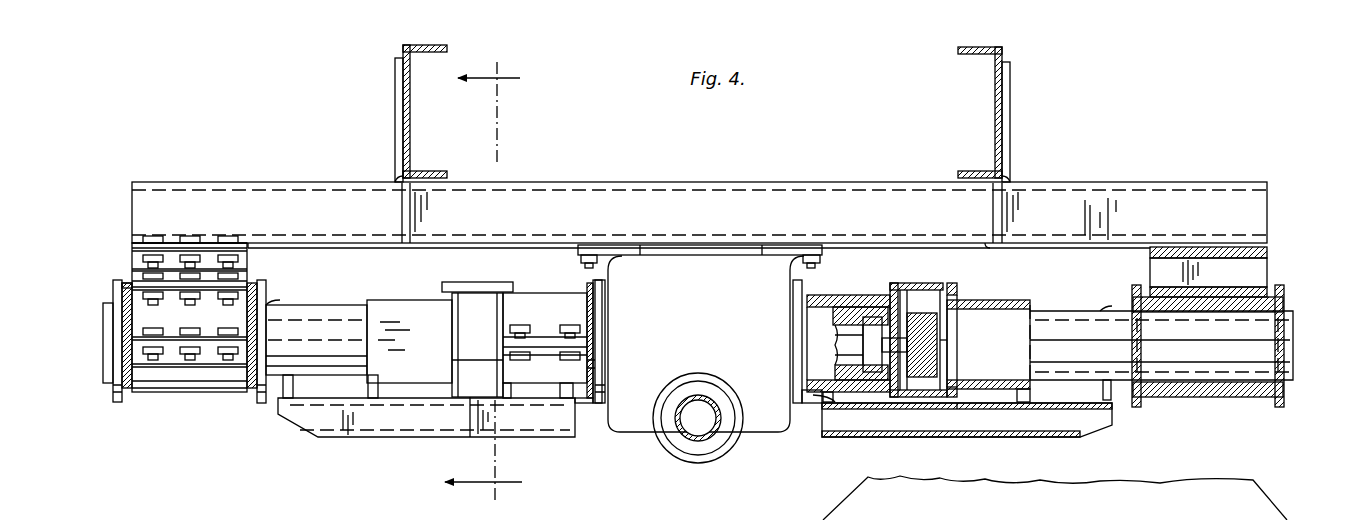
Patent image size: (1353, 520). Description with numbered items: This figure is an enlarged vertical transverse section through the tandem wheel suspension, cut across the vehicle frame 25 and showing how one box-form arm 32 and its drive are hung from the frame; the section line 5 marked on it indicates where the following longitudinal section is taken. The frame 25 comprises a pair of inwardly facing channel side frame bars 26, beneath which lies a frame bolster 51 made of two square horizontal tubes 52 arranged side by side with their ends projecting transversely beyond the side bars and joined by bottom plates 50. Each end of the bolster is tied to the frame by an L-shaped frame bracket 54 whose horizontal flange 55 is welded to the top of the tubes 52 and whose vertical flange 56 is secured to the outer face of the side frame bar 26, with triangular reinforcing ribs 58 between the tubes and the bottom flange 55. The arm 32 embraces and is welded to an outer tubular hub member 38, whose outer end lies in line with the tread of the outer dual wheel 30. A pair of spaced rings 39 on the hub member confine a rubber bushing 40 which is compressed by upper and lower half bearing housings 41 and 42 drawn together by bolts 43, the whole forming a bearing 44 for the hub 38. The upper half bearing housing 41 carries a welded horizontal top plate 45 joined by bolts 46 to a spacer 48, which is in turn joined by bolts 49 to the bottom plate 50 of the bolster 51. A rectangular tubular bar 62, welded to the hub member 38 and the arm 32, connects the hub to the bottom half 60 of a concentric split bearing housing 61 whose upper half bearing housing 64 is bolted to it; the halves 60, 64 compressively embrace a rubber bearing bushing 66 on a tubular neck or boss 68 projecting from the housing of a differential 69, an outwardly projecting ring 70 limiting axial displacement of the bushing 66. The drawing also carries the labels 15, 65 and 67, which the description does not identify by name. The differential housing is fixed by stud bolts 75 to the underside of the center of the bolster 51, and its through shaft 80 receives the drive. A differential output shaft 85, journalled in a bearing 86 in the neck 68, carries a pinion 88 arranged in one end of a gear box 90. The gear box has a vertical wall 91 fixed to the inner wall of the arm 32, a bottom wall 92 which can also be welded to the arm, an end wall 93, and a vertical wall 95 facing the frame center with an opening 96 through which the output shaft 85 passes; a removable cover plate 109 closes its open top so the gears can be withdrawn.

The section line 5— 5 is at (485, 282).
The housing bracket 15 is at (608, 273).
The vehicle frame 25 is at (1040, 82).
The main longitudinal side frame bar 26 is at (410, 126).
The wheel 30 is at (1338, 498).
The box-form arm 32 is at (398, 300).
The outer tubular hub member 38 is at (288, 306).
The ring 39 is at (116, 403).
The rubber bushing 40 is at (266, 320).
The upper half bearing housing 41 is at (145, 318).
The lower half bearing housing 42 is at (150, 355).
The bolt 43 is at (215, 328).
The bearing 44 is at (210, 400).
The horizontal top plate 45 is at (115, 287).
The bolt 46 is at (140, 276).
The spacer 48 is at (140, 262).
The bolt 49 is at (190, 236).
The bottom plate 50 is at (135, 243).
The frame bolster 51 is at (327, 182).
The horizontal tube 52 is at (664, 182).
The L-shaped frame bracket 54 is at (397, 120).
The horizontal flange 55 is at (430, 200).
The vertical flange 56 is at (395, 70).
The triangular reinforcing rib 58 is at (398, 205).
The bottom half bearing housing 60 is at (540, 400).
The split bearing housing 61 is at (553, 275).
The tubular bar 62 is at (385, 437).
The upper half bearing housing 64 is at (525, 300).
The bearing plate 65 is at (605, 318).
The rubber bearing bushing 66 is at (605, 364).
The coupling 67 is at (835, 352).
The tubular neck or boss 68 is at (605, 340).
The differential 69 is at (652, 450).
The ring 70 is at (805, 265).
The stud bolt 75 is at (820, 282).
The through shaft 80 is at (712, 448).
The differential output shaft 85 is at (920, 283).
The bearing 86 is at (890, 312).
The pinion 88 is at (922, 400).
The gear box 90 is at (470, 322).
The vertical wall 91 is at (455, 310).
The bottom wall 92 is at (478, 405).
The end wall 93 is at (458, 373).
The vertical wall 95 is at (510, 320).
The opening 96 is at (950, 356).
The removable cover plate 109 is at (470, 282).